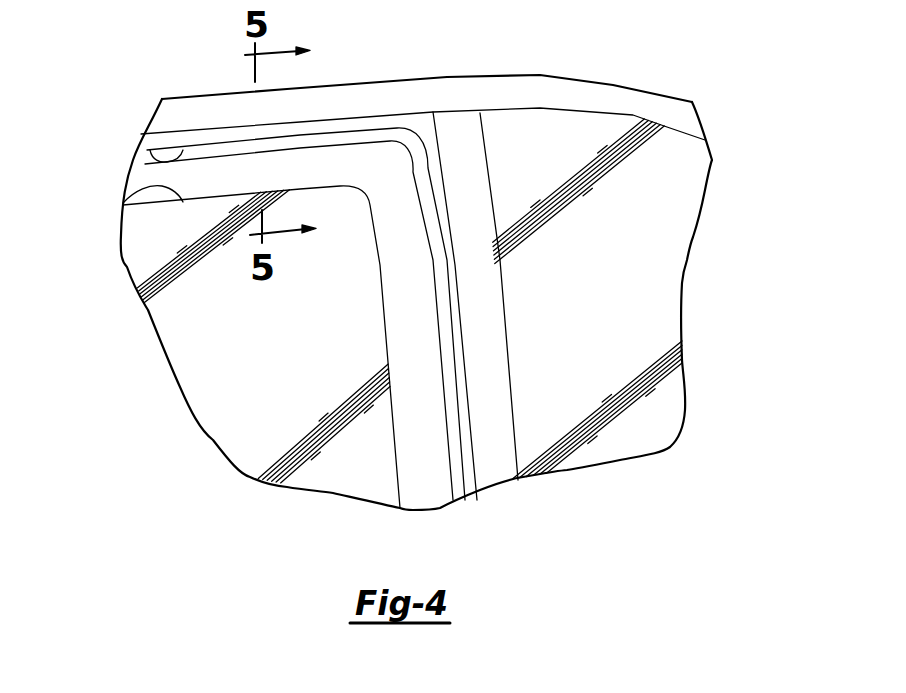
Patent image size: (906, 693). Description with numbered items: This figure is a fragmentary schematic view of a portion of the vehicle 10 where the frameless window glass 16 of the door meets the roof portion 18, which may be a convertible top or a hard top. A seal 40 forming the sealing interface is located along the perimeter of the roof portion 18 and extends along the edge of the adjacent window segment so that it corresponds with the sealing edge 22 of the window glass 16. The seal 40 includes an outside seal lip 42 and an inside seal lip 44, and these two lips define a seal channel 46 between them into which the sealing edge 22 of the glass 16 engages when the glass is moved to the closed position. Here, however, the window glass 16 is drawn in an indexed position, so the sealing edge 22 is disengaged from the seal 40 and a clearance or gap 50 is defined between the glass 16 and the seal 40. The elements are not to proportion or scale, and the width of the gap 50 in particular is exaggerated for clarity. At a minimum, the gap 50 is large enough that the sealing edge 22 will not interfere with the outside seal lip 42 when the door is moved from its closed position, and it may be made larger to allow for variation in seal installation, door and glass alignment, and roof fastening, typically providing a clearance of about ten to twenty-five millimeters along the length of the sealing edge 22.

The vehicle 10 is at (690, 58).
The window glass 16 is at (208, 371).
The roof portion 18 is at (347, 100).
The sealing edge 22 is at (127, 202).
The seal 40 is at (417, 130).
The outside seal lip 42 is at (217, 140).
The inside seal lip 44 is at (152, 158).
The seal channel 46 is at (148, 147).
The gap 50 is at (152, 175).